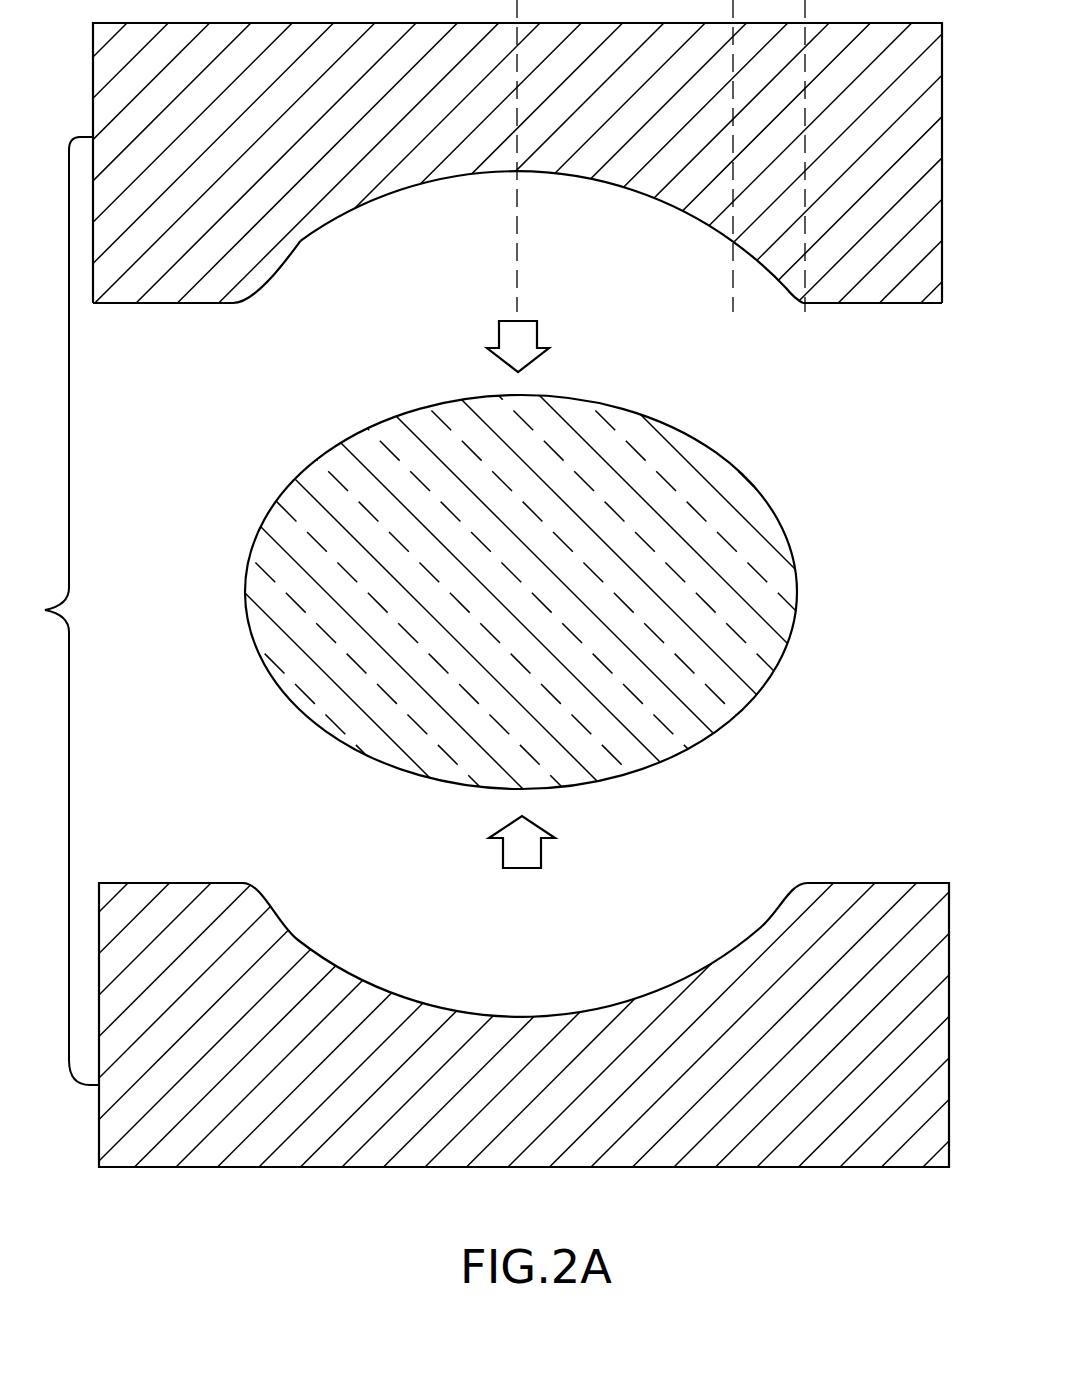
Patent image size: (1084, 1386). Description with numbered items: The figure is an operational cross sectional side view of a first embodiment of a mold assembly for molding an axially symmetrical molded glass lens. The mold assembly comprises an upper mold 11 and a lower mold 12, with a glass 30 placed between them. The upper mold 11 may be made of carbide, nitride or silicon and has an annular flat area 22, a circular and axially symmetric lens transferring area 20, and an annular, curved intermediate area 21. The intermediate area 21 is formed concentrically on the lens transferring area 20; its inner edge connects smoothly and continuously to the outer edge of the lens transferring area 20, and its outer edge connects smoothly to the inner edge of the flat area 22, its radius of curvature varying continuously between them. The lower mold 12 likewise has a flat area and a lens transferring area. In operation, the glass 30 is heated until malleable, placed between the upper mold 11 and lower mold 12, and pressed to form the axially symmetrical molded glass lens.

The upper mold 11 is at (172, 289).
The lower mold 12 is at (158, 913).
The lens transferring area 20 is at (662, 198).
The intermediate area 21 is at (762, 290).
The flat area 22 is at (836, 303).
The glass 30 is at (727, 483).